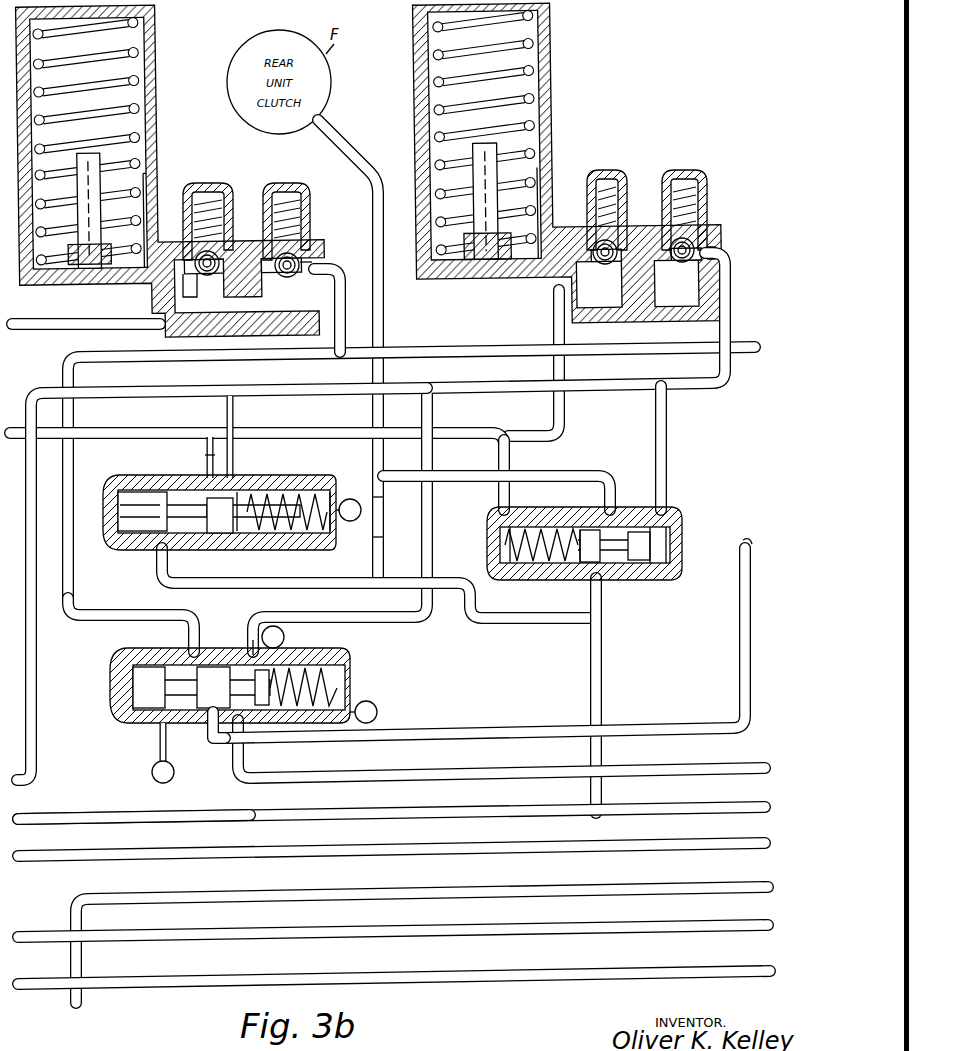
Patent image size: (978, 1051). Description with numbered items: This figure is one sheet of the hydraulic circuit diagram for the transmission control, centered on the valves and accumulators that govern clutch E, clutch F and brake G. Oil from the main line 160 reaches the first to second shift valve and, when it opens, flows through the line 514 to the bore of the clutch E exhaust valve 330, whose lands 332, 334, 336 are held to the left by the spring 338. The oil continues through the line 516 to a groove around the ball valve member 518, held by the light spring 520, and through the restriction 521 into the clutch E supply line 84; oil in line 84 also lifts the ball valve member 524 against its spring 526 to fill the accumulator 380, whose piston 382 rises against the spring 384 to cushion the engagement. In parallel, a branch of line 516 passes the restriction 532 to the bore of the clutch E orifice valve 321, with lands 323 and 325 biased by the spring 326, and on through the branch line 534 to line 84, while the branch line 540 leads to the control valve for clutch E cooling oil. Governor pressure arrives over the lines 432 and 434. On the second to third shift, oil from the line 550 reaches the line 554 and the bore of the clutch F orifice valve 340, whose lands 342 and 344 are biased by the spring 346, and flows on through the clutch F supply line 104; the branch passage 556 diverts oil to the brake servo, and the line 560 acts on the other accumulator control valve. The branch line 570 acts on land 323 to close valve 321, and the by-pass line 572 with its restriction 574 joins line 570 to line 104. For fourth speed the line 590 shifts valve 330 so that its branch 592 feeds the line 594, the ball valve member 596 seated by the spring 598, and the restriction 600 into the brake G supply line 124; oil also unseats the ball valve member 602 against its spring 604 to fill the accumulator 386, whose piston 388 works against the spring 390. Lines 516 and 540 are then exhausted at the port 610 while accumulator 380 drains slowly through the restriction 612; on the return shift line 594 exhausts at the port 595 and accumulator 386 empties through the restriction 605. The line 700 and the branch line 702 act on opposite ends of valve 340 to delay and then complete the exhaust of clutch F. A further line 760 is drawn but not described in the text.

The clutch E supply line 84 is at (14, 428).
The clutch F supply line 104 is at (335, 128).
The brake G supply line 124 is at (44, 322).
The main line 160 is at (50, 932).
The clutch E orifice valve 321 is at (222, 533).
The land 323 is at (190, 532).
The land 325 is at (245, 530).
The spring 326 is at (310, 535).
The clutch E exhaust valve 330 is at (244, 650).
The land 332 is at (135, 685).
The land 334 is at (212, 665).
The land 336 is at (250, 742).
The spring 338 is at (345, 665).
The clutch F orifice valve 340 is at (613, 528).
The land 342 is at (584, 528).
The land 344 is at (672, 555).
The spring 346 is at (540, 563).
The accumulator 380 is at (556, 115).
The piston 382 is at (470, 262).
The spring 384 is at (440, 108).
The accumulator 386 is at (160, 122).
The piston 388 is at (140, 195).
The spring 390 is at (138, 70).
The governor line 432 is at (72, 1000).
The governor line 434 is at (52, 862).
The line 514 is at (720, 767).
The line 516 is at (732, 262).
The ball valve member 518 is at (708, 245).
The light spring 520 is at (706, 190).
The restriction 521 is at (660, 283).
The ball valve member 524 is at (606, 266).
The spring 526 is at (612, 175).
The restriction 532 is at (213, 435).
The branch line 534 is at (205, 455).
The branch line 540 is at (100, 398).
The line 550 is at (234, 410).
The line 554 is at (602, 635).
The branch passage 556 is at (745, 342).
The line 560 is at (70, 824).
The branch line 570 is at (335, 578).
The by-pass line 572 is at (385, 497).
The restriction 574 is at (385, 537).
The line 590 is at (745, 540).
The branch line 592 is at (212, 738).
The line 594 is at (336, 262).
The exhaust port 595 is at (152, 773).
The ball valve member 596 is at (302, 258).
The spring 598 is at (305, 200).
The restriction 600 is at (287, 278).
The ball valve member 602 is at (218, 252).
The spring 604 is at (215, 202).
The restriction 605 is at (180, 295).
The exhaust port 610 is at (285, 637).
The restriction 612 is at (565, 300).
The line 700 is at (668, 453).
The branch line 702 is at (511, 458).
The conduit 760 is at (55, 978).